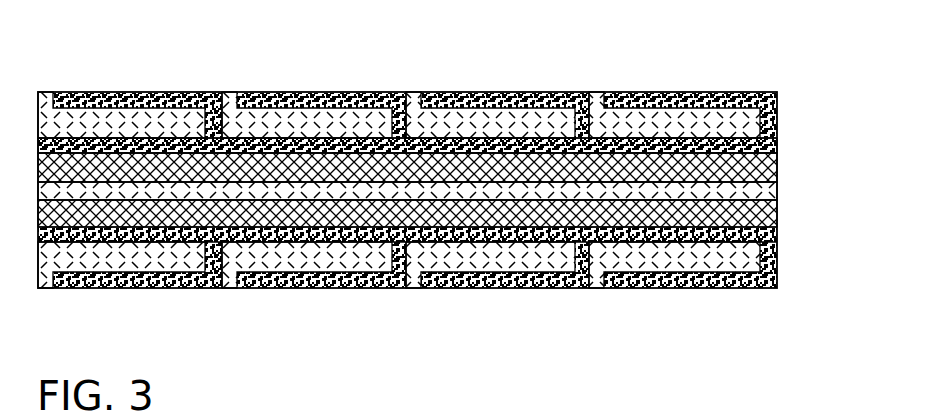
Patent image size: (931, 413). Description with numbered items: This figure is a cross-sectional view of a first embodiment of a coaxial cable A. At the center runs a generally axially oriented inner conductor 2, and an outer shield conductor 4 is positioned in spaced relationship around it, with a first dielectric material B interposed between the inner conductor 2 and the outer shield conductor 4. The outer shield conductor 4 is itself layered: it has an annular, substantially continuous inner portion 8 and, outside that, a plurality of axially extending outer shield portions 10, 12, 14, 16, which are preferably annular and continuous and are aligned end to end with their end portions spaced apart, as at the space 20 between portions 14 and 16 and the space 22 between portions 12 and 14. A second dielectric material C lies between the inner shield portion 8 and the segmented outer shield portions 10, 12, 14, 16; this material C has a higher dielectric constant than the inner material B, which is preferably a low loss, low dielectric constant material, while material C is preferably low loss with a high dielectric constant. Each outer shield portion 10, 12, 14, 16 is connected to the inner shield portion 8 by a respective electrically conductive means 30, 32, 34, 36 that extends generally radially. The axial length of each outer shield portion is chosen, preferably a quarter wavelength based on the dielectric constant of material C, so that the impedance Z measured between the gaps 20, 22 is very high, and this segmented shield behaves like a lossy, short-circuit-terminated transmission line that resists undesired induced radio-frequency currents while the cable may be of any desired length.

The inner conductor 2 is at (790, 221).
The outer shield conductor 4 is at (790, 147).
The inner portion 8 is at (752, 186).
The outer shield portion 10 is at (87, 93).
The outer shield portion 12 is at (283, 93).
The outer shield portion 14 is at (485, 93).
The outer shield portion 16 is at (717, 93).
The space 20 is at (602, 93).
The space 22 is at (419, 104).
The electrically conductive means 30 is at (212, 118).
The electrically conductive means 32 is at (392, 118).
The electrically conductive means 34 is at (575, 118).
The electrically conductive means 36 is at (778, 118).
The impedance Z is at (248, 80).
The coaxial cable A is at (98, 300).
The first dielectric material B is at (187, 212).
The second dielectric material C is at (267, 257).